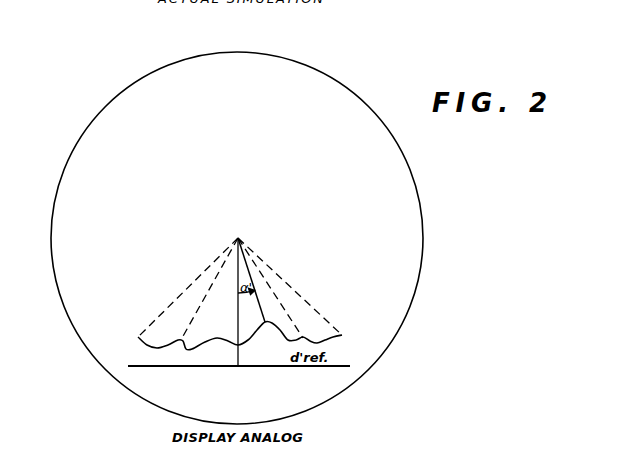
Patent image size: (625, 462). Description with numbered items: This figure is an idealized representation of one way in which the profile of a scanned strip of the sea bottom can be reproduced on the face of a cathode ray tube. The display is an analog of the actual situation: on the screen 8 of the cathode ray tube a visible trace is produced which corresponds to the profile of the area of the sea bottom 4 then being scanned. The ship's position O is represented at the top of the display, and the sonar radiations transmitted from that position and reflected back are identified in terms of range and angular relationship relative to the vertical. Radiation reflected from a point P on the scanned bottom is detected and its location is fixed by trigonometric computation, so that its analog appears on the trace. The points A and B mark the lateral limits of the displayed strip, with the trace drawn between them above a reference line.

The screen 8 is at (417, 190).
The sea bottom 4 is at (184, 344).
The position of the ship O is at (243, 293).
The left limit of field of view A' A is at (179, 293).
The right limit of field of view B' B is at (299, 293).
The point P is at (260, 280).